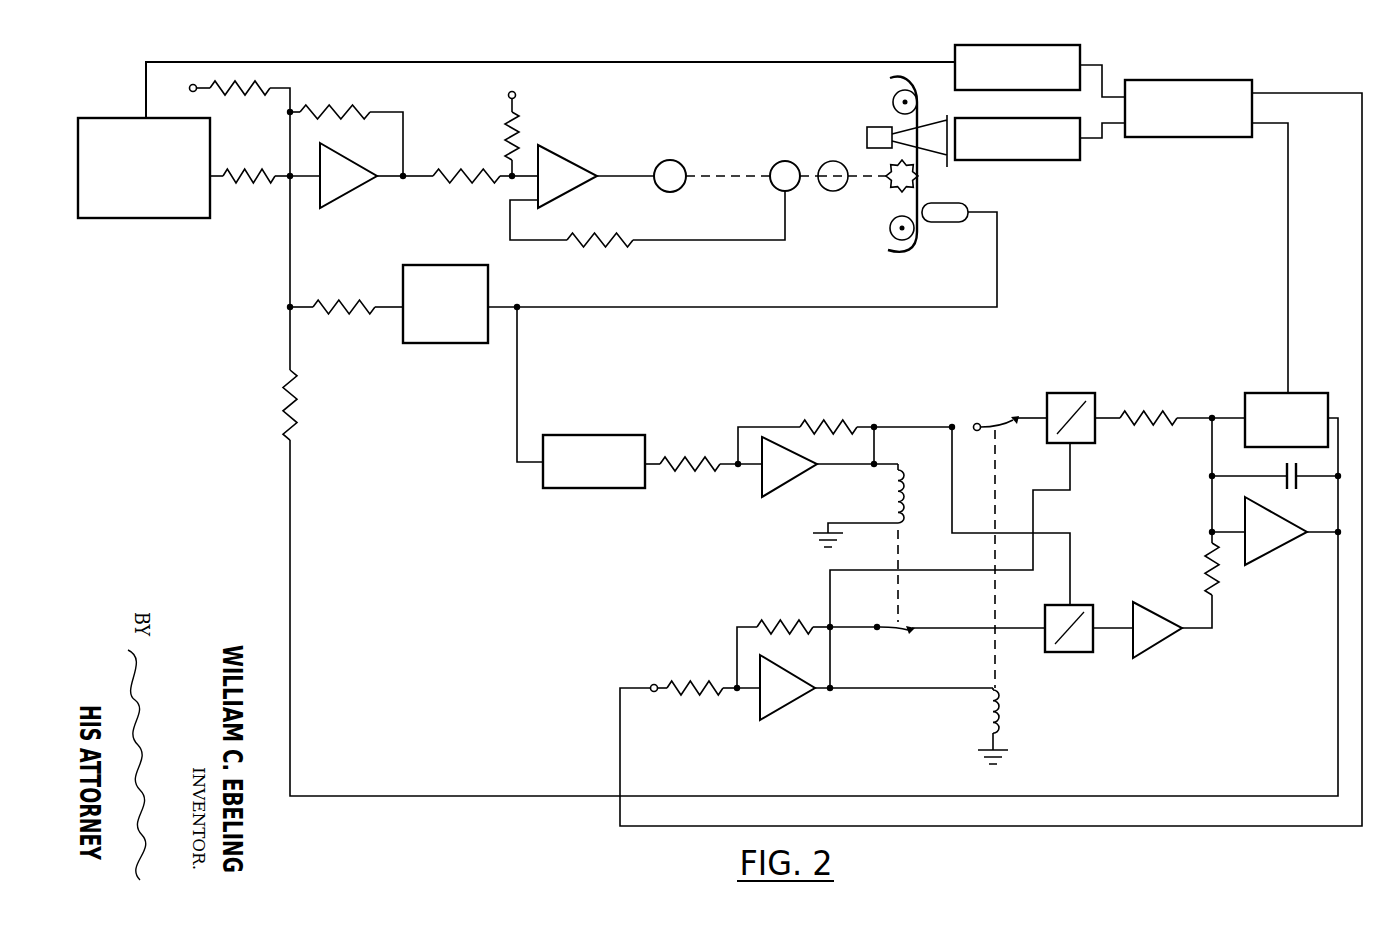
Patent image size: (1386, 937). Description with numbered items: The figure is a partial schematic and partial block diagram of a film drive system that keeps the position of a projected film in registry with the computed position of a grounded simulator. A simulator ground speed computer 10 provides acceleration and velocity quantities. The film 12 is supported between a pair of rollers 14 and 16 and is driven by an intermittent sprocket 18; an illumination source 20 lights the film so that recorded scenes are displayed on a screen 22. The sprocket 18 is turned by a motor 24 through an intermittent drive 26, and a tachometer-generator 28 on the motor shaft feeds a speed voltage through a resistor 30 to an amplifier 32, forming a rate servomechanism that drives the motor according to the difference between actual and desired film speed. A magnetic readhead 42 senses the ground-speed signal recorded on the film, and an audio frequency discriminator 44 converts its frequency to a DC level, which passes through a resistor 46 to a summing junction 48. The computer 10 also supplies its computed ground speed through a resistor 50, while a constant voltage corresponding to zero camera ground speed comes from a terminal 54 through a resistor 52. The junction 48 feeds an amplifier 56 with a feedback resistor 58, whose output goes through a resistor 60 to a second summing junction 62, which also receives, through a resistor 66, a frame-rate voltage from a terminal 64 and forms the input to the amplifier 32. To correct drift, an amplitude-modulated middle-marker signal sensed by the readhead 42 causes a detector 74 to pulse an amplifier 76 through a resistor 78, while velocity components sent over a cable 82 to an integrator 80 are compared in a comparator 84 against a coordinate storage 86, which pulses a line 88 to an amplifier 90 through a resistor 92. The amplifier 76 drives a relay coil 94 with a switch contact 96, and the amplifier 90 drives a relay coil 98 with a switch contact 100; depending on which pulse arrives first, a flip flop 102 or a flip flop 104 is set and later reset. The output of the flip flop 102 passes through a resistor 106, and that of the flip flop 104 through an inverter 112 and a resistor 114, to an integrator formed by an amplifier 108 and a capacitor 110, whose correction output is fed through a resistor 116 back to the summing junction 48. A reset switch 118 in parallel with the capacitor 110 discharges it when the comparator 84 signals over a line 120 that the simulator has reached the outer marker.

The simulator ground speed computer 10 is at (137, 220).
The film 12 is at (908, 248).
The roller 14 is at (893, 100).
The roller 16 is at (890, 228).
The intermittent sprocket 18 is at (890, 185).
The illumination source 20 is at (867, 128).
The screen 22 is at (947, 118).
The motor 24 is at (668, 160).
The intermittent drive 26 is at (843, 162).
The tachometer-generator 28 is at (765, 148).
The resistor 30 is at (608, 245).
The amplifier 32 is at (550, 150).
The magnetic readhead 42 is at (945, 203).
The audio frequency discriminator 44 is at (445, 265).
The resistor 46 is at (340, 300).
The summing junction 48 is at (286, 180).
The resistor 50 is at (258, 170).
The resistor 52 is at (268, 90).
The terminal 54 is at (190, 84).
The amplifier 56 is at (338, 203).
The resistor 58 is at (352, 106).
The resistor 60 is at (458, 185).
The summing junction 62 is at (510, 180).
The terminal 64 is at (518, 92).
The resistor 66 is at (505, 132).
The detector 74 is at (575, 435).
The amplifier 76 is at (770, 497).
The resistor 78 is at (695, 458).
The integrator 80 is at (953, 55).
The cable 82 is at (640, 62).
The comparator 84 is at (1180, 80).
The coordinate storage 86 is at (1065, 162).
The line 88 is at (1362, 180).
The amplifier 90 is at (785, 705).
The resistor 92 is at (700, 680).
The relay coil 94 is at (893, 485).
The switch contact 96 is at (895, 635).
The relay coil 98 is at (985, 715).
The switch contact 100 is at (998, 420).
The flip flop 102 is at (1065, 393).
The flip flop 104 is at (1065, 655).
The resistor 106 is at (1140, 410).
The amplifier 108 is at (1262, 560).
The capacitor 110 is at (1293, 489).
The inverter 112 is at (1150, 650).
The resistor 114 is at (1205, 562).
The resistor 116 is at (300, 400).
The reset switch 118 is at (1255, 390).
The line 120 is at (1286, 212).